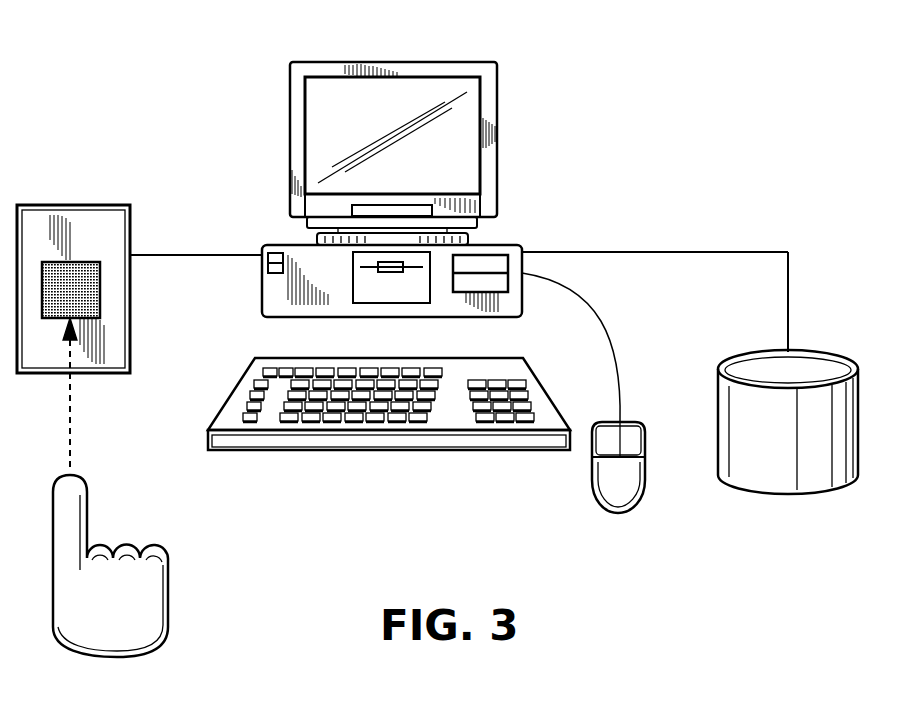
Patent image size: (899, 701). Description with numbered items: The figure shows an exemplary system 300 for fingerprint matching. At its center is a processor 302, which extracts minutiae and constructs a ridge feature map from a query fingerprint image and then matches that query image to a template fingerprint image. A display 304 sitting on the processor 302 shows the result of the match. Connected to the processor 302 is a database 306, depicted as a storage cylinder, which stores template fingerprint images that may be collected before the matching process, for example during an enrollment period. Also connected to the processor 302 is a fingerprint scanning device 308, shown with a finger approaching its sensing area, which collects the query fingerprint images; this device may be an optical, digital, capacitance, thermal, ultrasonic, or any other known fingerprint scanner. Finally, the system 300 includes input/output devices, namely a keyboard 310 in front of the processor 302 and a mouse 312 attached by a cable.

The system 300 is at (637, 555).
The processor 302 is at (518, 247).
The display 304 is at (438, 62).
The database 306 is at (812, 350).
The fingerprint scanning device 308 is at (97, 205).
The keyboard 310 is at (208, 437).
The mouse 312 is at (592, 490).